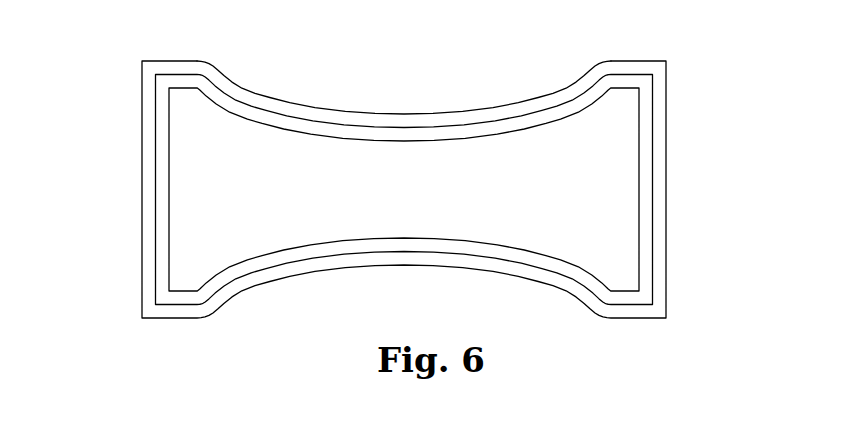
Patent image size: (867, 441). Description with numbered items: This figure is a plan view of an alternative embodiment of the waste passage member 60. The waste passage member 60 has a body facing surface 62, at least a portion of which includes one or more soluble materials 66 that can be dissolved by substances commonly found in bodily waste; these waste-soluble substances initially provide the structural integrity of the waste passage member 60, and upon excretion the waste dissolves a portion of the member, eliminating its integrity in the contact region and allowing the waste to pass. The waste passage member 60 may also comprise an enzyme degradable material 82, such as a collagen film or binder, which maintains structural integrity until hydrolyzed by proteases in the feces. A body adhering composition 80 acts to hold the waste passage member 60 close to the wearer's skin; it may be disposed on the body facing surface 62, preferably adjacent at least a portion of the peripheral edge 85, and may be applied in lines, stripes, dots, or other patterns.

The waste passage member 60 is at (694, 40).
The body facing surface 62 is at (355, 218).
The soluble materials 66 is at (620, 206).
The body adhering composition 80 is at (645, 122).
The enzyme degradable material 82 is at (187, 213).
The peripheral edge 85 is at (251, 88).